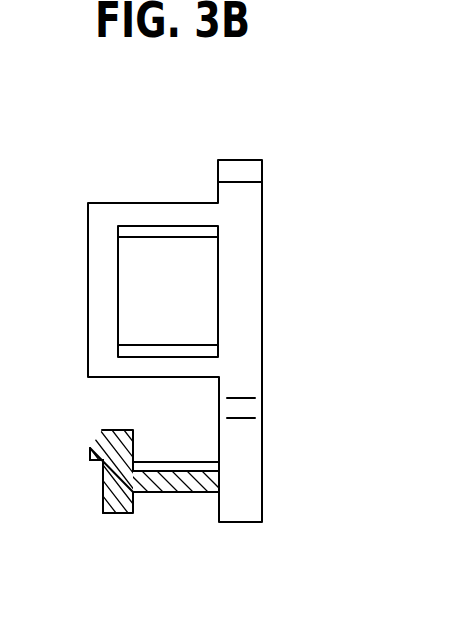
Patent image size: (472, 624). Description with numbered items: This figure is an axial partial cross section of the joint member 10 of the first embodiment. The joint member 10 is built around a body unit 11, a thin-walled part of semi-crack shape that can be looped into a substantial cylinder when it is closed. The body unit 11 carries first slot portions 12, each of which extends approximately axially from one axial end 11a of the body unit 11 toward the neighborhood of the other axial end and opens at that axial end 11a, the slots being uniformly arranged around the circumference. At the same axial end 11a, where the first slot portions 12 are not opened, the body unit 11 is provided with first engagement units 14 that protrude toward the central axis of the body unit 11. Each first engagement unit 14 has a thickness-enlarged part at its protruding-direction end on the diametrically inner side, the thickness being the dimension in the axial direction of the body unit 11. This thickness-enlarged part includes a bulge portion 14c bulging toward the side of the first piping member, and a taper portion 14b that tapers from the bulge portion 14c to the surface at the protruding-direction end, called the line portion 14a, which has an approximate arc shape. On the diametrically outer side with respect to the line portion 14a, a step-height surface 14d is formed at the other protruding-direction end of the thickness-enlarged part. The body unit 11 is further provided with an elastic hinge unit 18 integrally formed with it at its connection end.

The joint member 10 is at (150, 188).
The body unit 11 is at (185, 484).
The axial end 11a is at (147, 495).
The first slot portion 12 is at (162, 226).
The first engagement unit 14 is at (98, 281).
The line portion 14a is at (103, 430).
The taper portion 14b is at (90, 449).
The bulge portion 14c is at (90, 460).
The step-height surface 14d is at (103, 490).
The elastic hinge unit 18 is at (247, 408).